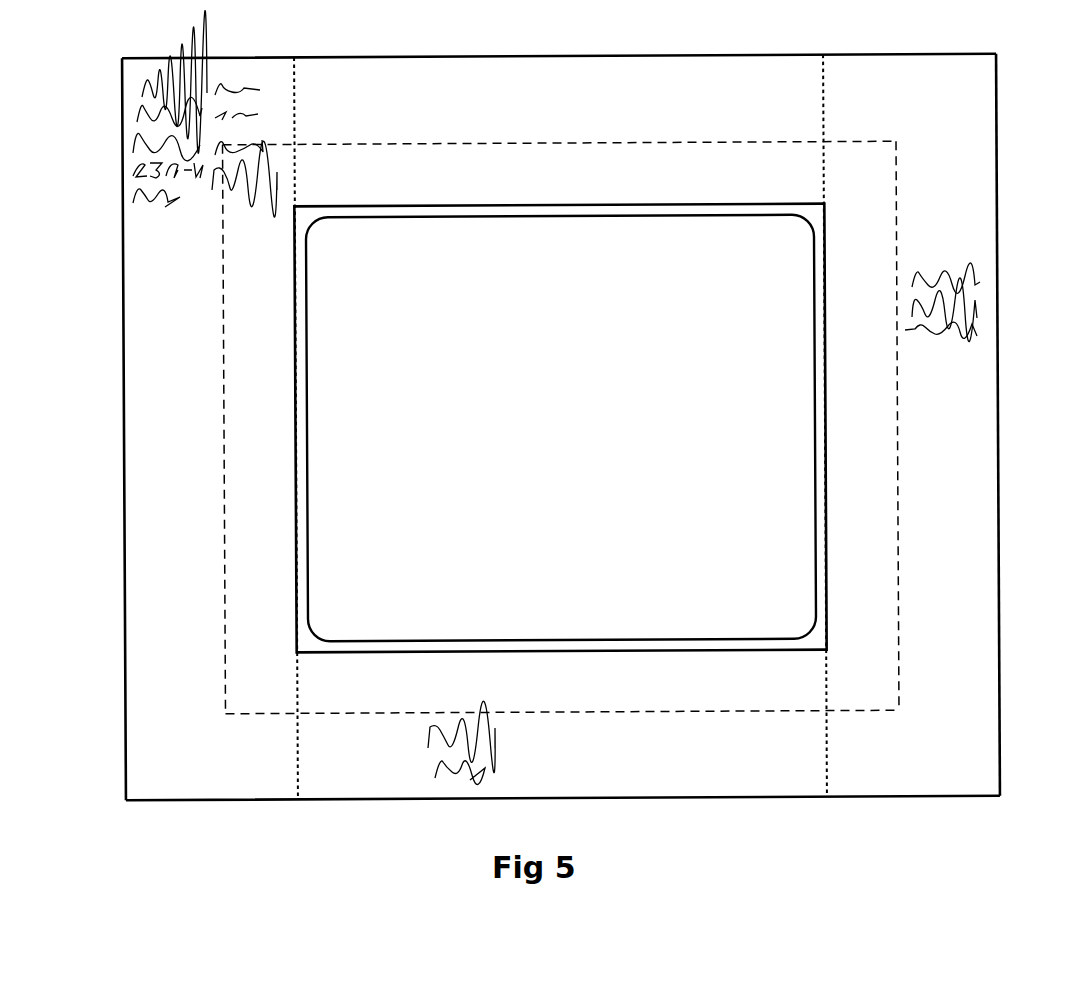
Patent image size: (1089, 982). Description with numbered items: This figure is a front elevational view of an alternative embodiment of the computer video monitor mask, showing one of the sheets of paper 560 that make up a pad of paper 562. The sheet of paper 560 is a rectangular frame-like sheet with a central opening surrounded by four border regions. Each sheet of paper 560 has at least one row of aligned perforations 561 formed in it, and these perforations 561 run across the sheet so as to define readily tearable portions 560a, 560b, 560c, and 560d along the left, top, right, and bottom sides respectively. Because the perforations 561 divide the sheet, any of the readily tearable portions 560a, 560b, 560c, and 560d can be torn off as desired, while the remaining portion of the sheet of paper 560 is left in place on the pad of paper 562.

The sheet of paper 560 is at (703, 71).
The readily tearable portion 560a is at (192, 435).
The readily tearable portion 560b is at (568, 119).
The readily tearable portion 560c is at (962, 428).
The readily tearable portion 560d is at (575, 777).
The row of aligned perforations 561 is at (293, 101).
The pad of paper 562 is at (998, 386).